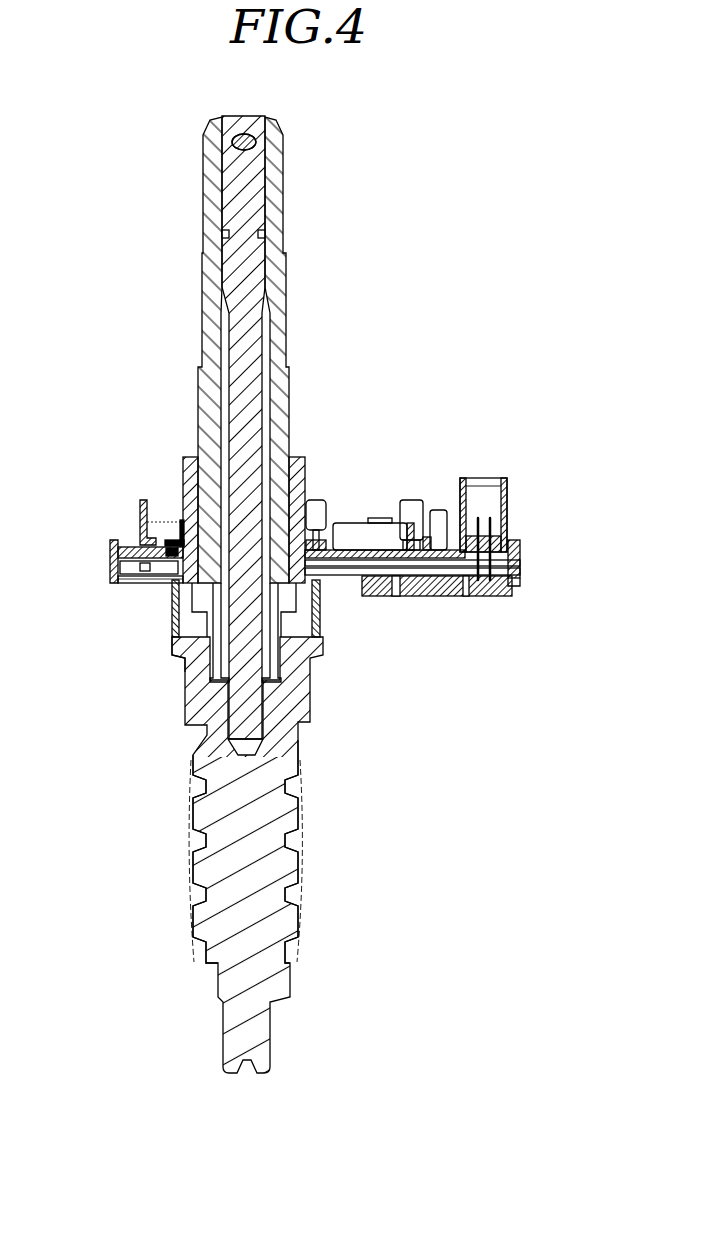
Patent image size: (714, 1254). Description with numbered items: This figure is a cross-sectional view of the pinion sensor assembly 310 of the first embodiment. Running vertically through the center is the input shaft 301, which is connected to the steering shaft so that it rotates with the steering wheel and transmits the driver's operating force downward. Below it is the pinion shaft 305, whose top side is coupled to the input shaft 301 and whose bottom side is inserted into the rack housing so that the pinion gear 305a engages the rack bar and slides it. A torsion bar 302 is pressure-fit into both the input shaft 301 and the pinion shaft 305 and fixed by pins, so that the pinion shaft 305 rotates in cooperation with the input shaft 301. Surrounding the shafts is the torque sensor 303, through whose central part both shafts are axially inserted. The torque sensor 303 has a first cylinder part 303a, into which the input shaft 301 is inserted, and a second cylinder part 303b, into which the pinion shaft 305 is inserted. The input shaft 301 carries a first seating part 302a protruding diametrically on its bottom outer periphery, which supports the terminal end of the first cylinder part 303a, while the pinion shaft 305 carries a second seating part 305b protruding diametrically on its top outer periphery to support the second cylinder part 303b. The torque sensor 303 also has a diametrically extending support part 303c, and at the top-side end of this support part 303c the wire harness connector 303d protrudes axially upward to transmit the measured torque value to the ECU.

The pinion sensor assembly 310 is at (84, 108).
The input shaft 301 is at (208, 286).
The torsion bar 302 is at (242, 396).
The first seating part 302a is at (318, 586).
The torque sensor 303 is at (110, 556).
The first cylinder part 303a is at (306, 468).
The second cylinder part 303b is at (172, 606).
The support part 303c is at (416, 597).
The wire harness connector 303d is at (508, 498).
The pinion shaft 305 is at (188, 708).
The pinion gear 305a is at (193, 872).
The second seating part 305b is at (172, 643).